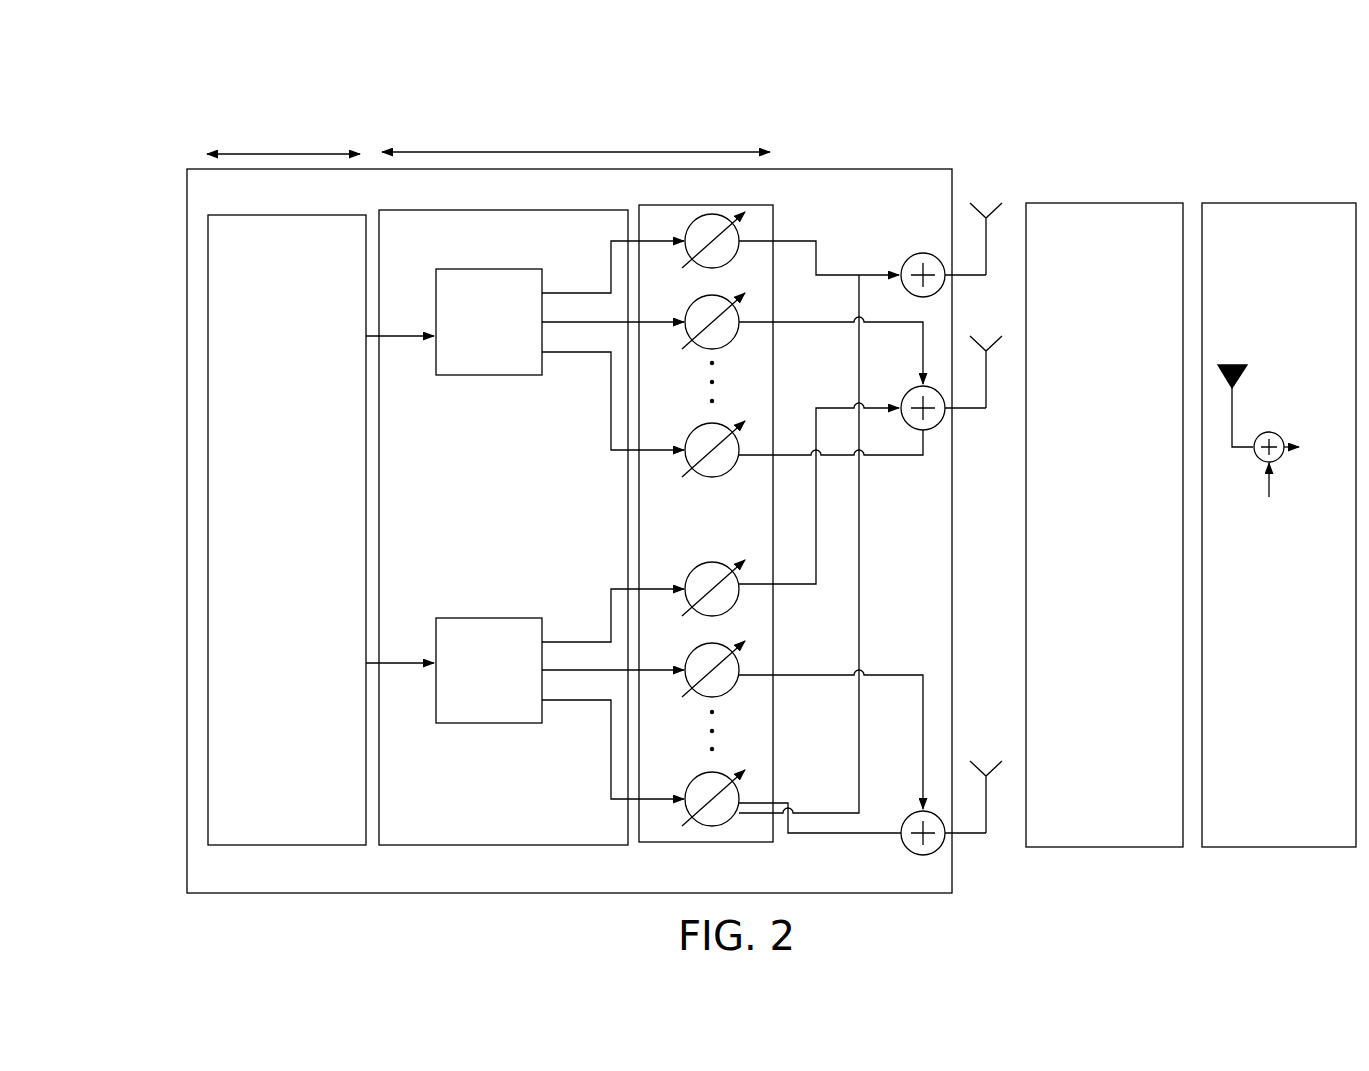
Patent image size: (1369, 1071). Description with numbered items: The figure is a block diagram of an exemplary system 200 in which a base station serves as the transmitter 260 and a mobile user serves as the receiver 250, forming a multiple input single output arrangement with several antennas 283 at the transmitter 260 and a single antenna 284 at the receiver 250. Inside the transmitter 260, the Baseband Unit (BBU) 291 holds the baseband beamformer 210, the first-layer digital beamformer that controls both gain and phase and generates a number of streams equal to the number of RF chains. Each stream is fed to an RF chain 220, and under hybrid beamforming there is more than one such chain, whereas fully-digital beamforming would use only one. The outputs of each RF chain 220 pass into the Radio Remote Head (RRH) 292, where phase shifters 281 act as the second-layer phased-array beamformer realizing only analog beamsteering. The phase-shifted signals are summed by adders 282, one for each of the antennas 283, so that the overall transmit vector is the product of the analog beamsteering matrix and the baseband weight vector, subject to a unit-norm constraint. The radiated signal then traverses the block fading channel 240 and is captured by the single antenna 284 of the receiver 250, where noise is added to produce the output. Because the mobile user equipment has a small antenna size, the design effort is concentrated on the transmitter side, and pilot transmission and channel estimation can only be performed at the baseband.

The system 200 is at (156, 110).
The baseband beamformer 210 is at (287, 530).
The RF chain 220 is at (489, 496).
The block fading channel 240 is at (1104, 525).
The receiver 250 is at (1279, 525).
The transmitter 260 is at (569, 531).
The phase shifters 281 is at (734, 134).
The adders 282 is at (933, 130).
The antennas 283 is at (1003, 183).
The single antenna 284 is at (1238, 357).
The Baseband Unit (BBU) 291 is at (283, 139).
The Radio Remote Head (RRH) 292 is at (576, 138).